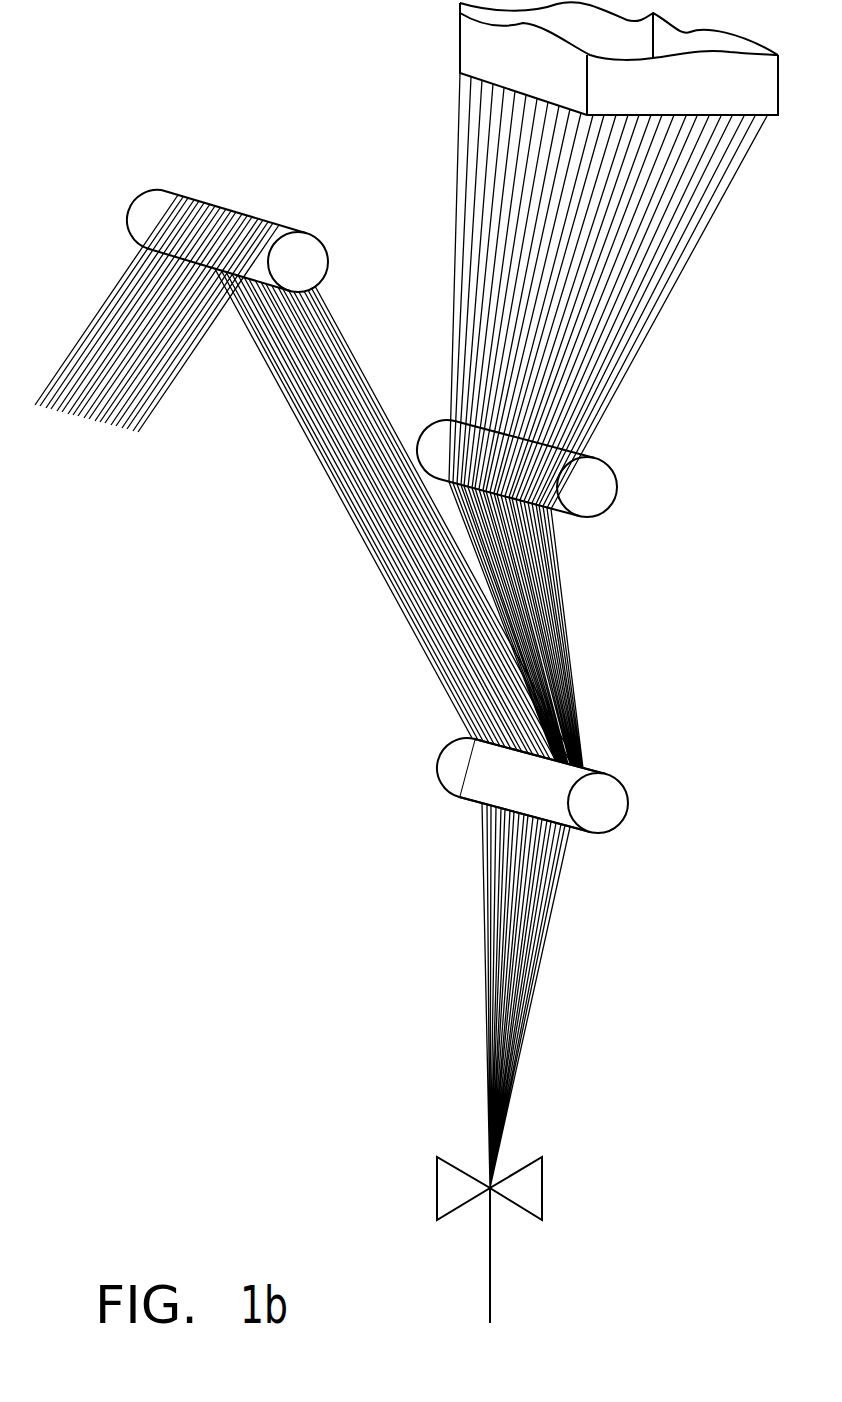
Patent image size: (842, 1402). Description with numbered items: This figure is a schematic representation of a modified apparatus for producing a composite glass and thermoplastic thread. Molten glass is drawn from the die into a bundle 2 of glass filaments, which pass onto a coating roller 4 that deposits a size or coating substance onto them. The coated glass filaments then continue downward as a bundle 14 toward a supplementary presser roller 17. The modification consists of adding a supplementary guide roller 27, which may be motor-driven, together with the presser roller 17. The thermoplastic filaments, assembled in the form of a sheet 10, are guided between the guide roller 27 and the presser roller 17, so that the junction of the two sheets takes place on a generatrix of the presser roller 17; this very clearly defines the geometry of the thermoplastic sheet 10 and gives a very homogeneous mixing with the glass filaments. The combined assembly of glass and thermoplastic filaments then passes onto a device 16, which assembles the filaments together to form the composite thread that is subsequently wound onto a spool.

The bundle of filaments 2 is at (657, 293).
The coating roller 4 is at (534, 468).
The sheet 10 is at (372, 553).
The first fibre bundle after roller 14 is at (562, 640).
The device 16 is at (437, 1190).
The presser roller 17 is at (597, 815).
The guide roller 27 is at (313, 265).